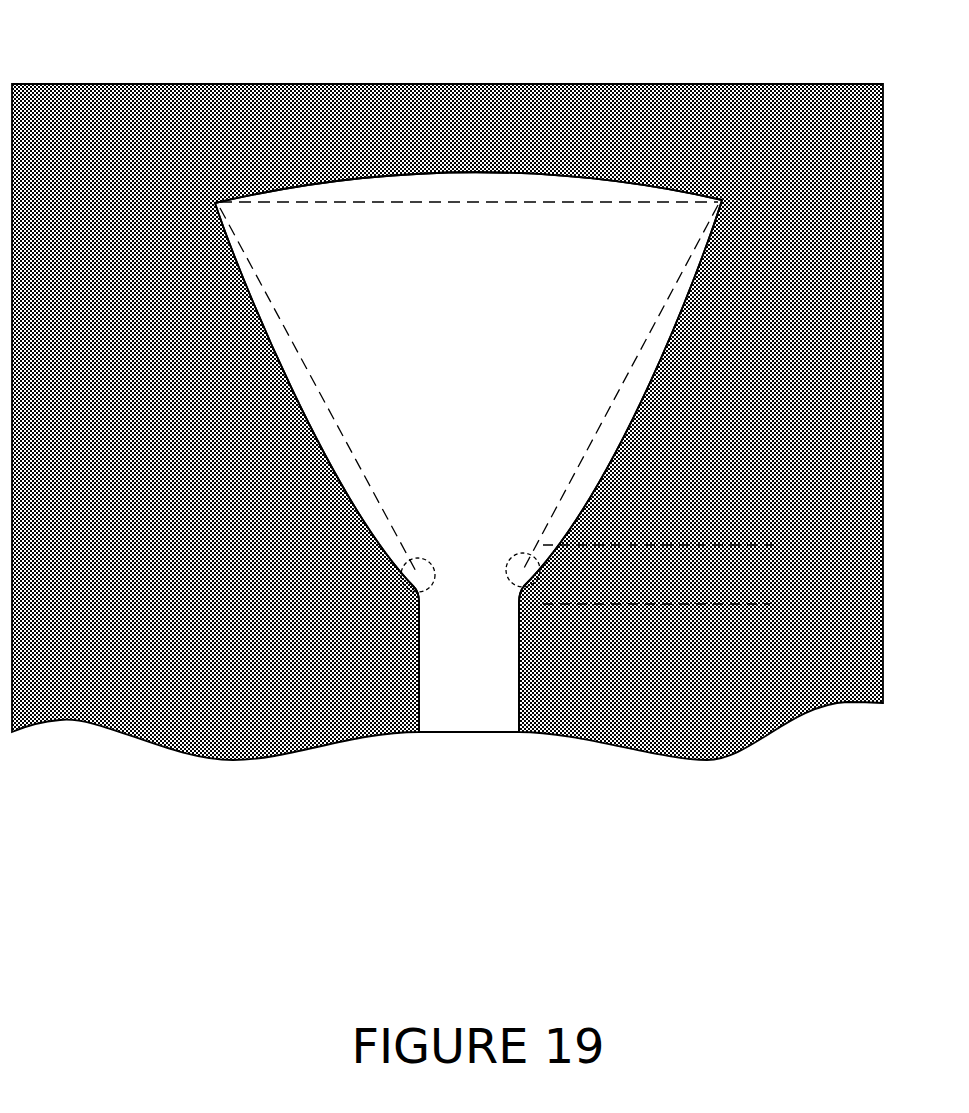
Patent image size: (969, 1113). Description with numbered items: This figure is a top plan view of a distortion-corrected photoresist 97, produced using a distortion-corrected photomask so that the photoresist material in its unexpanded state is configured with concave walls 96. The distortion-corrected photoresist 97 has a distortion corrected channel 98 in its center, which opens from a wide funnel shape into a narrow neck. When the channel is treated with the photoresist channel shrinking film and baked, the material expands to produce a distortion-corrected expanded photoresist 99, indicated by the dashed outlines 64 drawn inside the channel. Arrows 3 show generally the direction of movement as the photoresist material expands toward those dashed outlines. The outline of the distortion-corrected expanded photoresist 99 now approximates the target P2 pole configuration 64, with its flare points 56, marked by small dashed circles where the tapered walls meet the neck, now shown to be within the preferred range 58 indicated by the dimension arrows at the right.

The distortion-corrected photoresist 97 is at (265, 84).
The concave walls 96 is at (302, 400).
The distortion corrected channel 98 is at (398, 258).
The distortion-corrected expanded photoresist 99 is at (355, 463).
The flare points 56 is at (410, 585).
The target P2 pole configuration 64 is at (331, 445).
The preferred range 58 is at (733, 619).
The arrows 3 is at (469, 112).